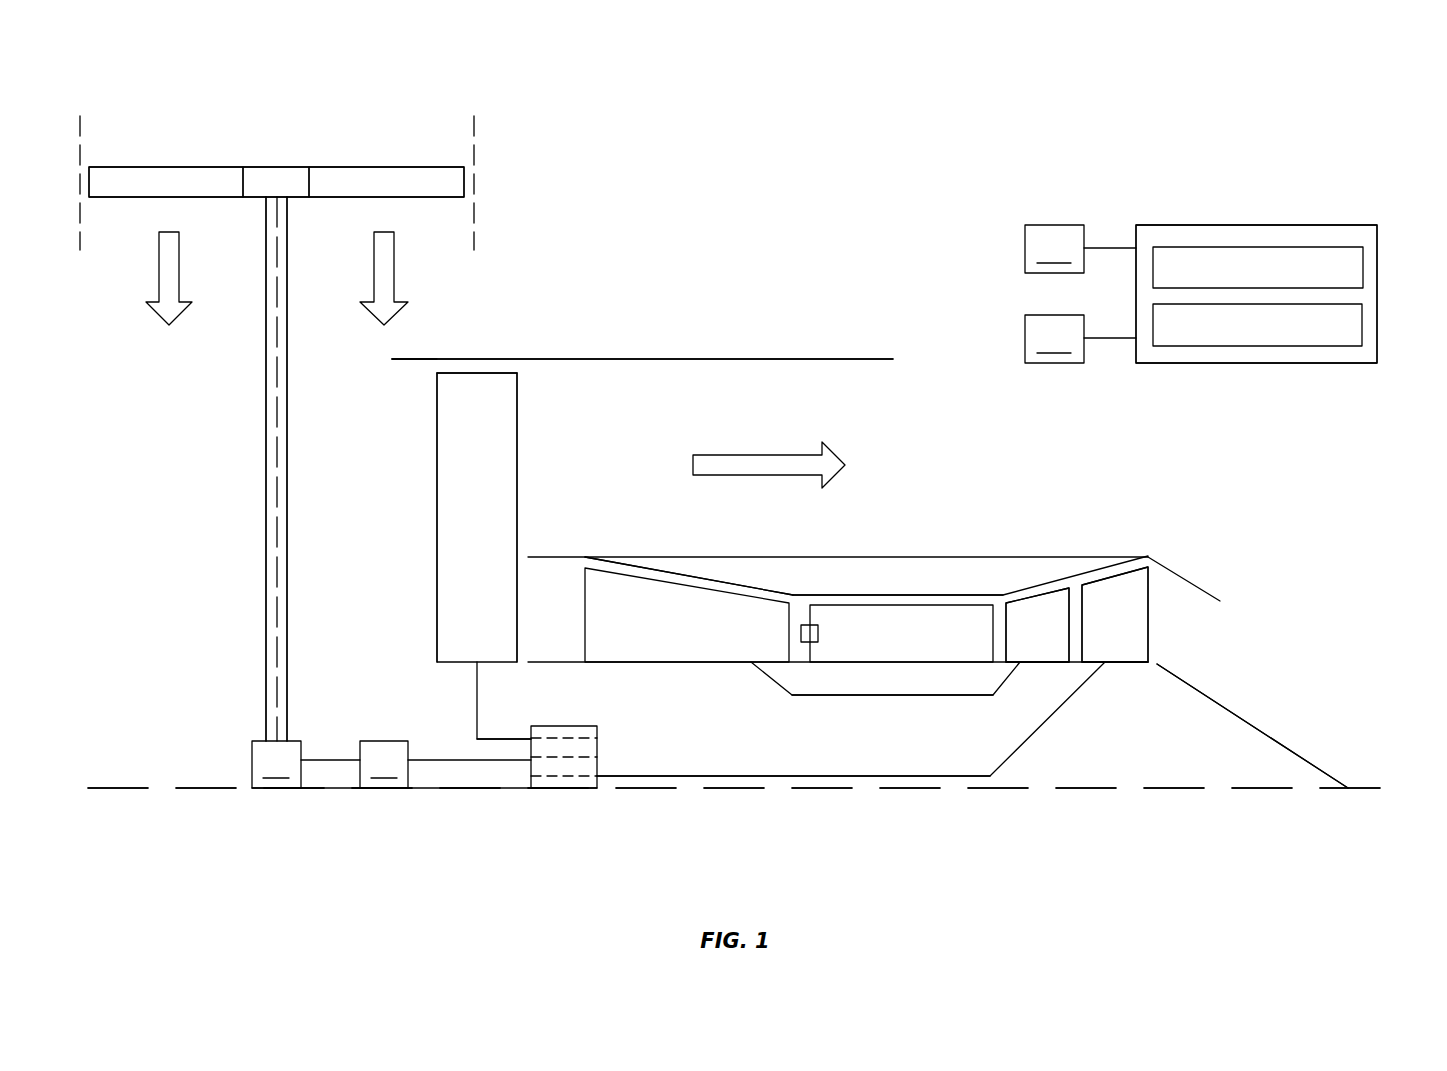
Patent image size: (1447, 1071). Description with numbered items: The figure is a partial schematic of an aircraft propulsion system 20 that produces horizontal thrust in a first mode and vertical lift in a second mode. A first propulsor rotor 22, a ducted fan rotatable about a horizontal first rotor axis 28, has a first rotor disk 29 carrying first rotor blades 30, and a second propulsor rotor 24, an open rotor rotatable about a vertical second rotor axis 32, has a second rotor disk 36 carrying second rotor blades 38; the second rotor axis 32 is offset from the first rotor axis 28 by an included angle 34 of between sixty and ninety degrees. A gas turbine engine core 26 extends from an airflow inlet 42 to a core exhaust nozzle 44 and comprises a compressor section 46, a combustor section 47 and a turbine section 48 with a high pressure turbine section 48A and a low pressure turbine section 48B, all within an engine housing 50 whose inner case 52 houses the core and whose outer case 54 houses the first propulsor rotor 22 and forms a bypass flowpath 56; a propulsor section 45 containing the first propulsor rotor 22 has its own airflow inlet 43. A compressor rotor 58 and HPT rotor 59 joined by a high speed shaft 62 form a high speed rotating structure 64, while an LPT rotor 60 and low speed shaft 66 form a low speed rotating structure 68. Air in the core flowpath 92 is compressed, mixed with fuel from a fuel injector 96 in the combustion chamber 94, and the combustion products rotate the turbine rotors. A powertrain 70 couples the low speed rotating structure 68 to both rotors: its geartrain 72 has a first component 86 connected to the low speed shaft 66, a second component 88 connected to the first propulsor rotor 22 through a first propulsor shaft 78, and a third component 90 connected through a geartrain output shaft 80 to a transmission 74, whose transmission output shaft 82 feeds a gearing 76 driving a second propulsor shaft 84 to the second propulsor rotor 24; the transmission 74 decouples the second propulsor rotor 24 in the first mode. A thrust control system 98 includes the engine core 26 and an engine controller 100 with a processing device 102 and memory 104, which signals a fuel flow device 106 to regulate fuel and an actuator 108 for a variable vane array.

The propulsion system 20 is at (1101, 110).
The first propulsor rotor 22 is at (425, 632).
The second propulsor rotor 24 is at (423, 160).
The gas turbine engine core 26 is at (1180, 512).
The first rotor axis 28 is at (1372, 790).
The first rotor disk 29 is at (477, 695).
The first rotor blades 30 is at (437, 497).
The second rotor axis 32 is at (267, 432).
The included angle 34 is at (272, 655).
The second rotor disk 36 is at (276, 167).
The second rotor blades 38 is at (168, 167).
The airflow inlet 42 is at (528, 595).
The airflow inlet 43 is at (388, 415).
The core exhaust nozzle 44 is at (1227, 602).
The propulsor section 45 is at (478, 372).
The compressor section 46 is at (708, 593).
The combustor section 47 is at (925, 595).
The turbine section 48 is at (988, 488).
The high pressure turbine section 48A is at (1037, 593).
The low pressure turbine section 48B is at (1110, 575).
The engine housing 50 is at (865, 325).
The inner case 52 is at (868, 557).
The outer case 54 is at (683, 358).
The bypass flowpath 56 is at (610, 438).
The compressor rotor 58 is at (700, 663).
The HPT rotor 59 is at (1043, 663).
The LPT rotor 60 is at (1130, 663).
The high speed shaft 62 is at (860, 695).
The high speed rotating structure 64 is at (965, 703).
The low speed shaft 66 is at (858, 776).
The low speed rotating structure 68 is at (958, 780).
The powertrain 70 is at (452, 840).
The geartrain 72 is at (563, 815).
The transmission 74 is at (228, 628).
The gearing 76 is at (276, 764).
The first propulsor shaft 78 is at (513, 740).
The geartrain output shaft 80 is at (442, 762).
The transmission output shaft 82 is at (328, 762).
The second propulsor shaft 84 is at (266, 548).
The first component 86 is at (573, 788).
The second component 88 is at (575, 738).
The third component 90 is at (587, 758).
The core flowpath 92 is at (570, 627).
The combustion chamber 94 is at (965, 644).
The fuel injector 96 is at (820, 634).
The thrust control system 98 is at (1308, 197).
The engine controller 100 is at (1383, 262).
The processing device 102 is at (1210, 247).
The memory 104 is at (1322, 348).
The fuel flow device 106 is at (1080, 249).
The actuator 108 is at (1080, 339).